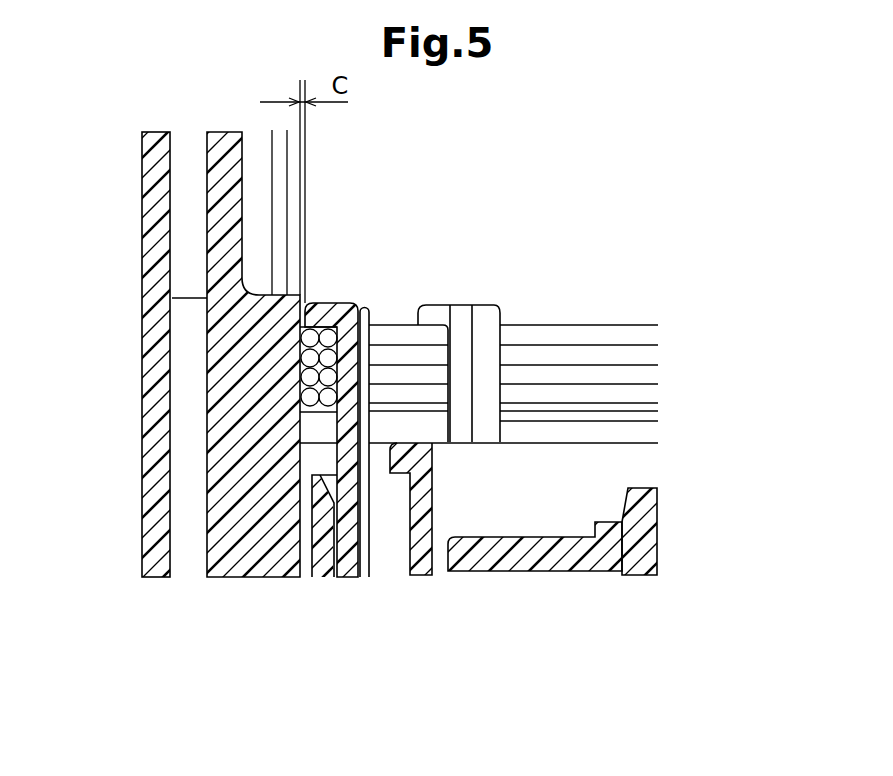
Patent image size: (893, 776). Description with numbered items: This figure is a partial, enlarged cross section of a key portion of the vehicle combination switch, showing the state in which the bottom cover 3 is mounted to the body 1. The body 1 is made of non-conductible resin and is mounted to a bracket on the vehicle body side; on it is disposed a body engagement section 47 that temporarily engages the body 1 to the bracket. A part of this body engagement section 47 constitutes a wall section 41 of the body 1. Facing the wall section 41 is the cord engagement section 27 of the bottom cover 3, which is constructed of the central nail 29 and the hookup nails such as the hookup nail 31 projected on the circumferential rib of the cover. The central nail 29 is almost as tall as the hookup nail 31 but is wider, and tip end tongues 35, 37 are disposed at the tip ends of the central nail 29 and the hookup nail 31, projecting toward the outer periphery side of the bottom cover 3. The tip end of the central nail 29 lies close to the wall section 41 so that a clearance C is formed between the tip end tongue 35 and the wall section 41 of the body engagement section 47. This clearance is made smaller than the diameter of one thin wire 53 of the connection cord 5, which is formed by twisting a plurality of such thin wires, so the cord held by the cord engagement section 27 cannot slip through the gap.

The body 1 is at (140, 192).
The bottom cover 3 is at (582, 572).
The connection cord 5 is at (579, 328).
The cord engagement section 27 is at (368, 305).
The central nail 29 is at (396, 325).
The hookup nail 31 is at (502, 330).
The tip end tongue 35 is at (313, 304).
The tip end tongue 37 is at (430, 308).
The wall section 41 is at (300, 453).
The body engagement section 47 is at (206, 153).
The thin wire 53 is at (308, 358).